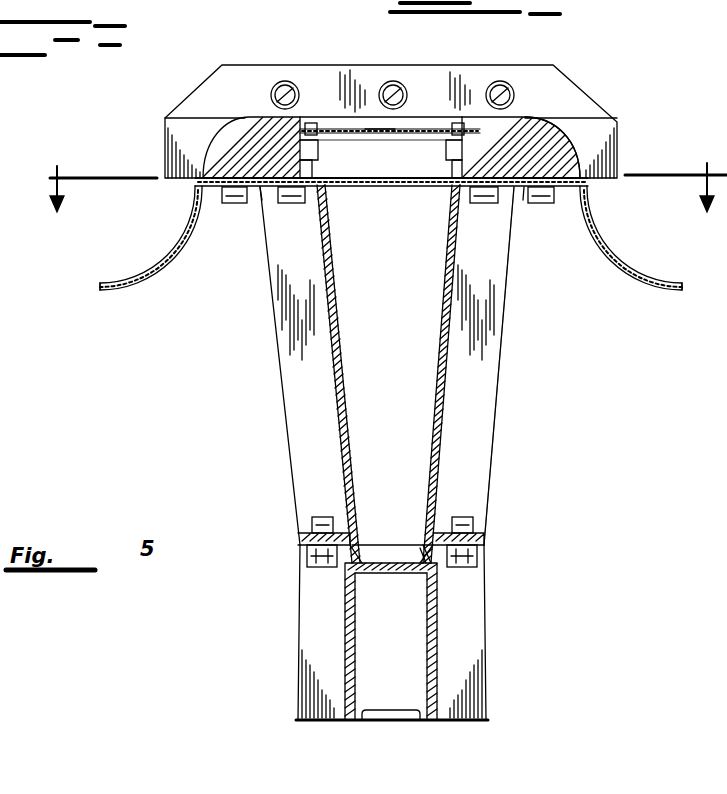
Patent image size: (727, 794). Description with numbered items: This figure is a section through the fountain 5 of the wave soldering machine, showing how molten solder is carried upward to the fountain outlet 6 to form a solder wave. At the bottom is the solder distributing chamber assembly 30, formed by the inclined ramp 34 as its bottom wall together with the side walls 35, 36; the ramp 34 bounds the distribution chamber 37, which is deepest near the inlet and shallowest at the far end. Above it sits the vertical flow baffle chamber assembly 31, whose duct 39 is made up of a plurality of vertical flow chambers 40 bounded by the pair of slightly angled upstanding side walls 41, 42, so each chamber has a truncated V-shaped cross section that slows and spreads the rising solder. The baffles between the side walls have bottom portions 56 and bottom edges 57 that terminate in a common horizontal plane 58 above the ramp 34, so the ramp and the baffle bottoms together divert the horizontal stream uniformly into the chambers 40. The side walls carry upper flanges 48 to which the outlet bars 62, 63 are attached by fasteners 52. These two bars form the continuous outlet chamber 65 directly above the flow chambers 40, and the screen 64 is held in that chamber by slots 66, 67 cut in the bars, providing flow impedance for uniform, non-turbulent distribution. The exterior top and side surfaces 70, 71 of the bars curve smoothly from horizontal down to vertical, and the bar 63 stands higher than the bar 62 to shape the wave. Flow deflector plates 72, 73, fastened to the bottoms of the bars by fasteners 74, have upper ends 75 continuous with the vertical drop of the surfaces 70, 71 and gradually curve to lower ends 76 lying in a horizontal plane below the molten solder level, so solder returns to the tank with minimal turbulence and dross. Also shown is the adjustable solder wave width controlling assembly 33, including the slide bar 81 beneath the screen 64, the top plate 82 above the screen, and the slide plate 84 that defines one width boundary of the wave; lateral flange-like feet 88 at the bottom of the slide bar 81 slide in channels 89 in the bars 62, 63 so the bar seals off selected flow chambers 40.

The fountain 5 is at (550, 365).
The fountain outlet 6 is at (355, 118).
The solder distributing chamber assembly 30 is at (293, 577).
The vertical flow baffle chamber assembly 31 is at (278, 326).
The adjustable solder wave width controlling assembly 33 is at (562, 70).
The inclined ramp 34 is at (408, 553).
The side wall 35 is at (350, 565).
The side wall 36 is at (434, 562).
The distribution chamber 37 is at (372, 550).
The duct 39 is at (378, 400).
The vertical flow chambers 40 is at (381, 357).
The upstanding side wall 41 is at (445, 279).
The upstanding side wall 42 is at (332, 286).
The upper flanges 48 is at (260, 190).
The fasteners 52 is at (295, 197).
The bottom portions 56 is at (420, 515).
The bottom edges 57 is at (405, 543).
The common plane 58 is at (388, 545).
The bar 62 is at (237, 142).
The bar 63 is at (548, 130).
The screen 64 is at (368, 128).
The outlet chamber 65 is at (411, 126).
The slot 66 is at (312, 124).
The slot 67 is at (460, 124).
The exterior top and side surface 70 is at (213, 137).
The exterior top and side surface 71 is at (565, 142).
The flow deflector plate 72 is at (173, 247).
The flow deflector plate 73 is at (612, 247).
The fasteners 74 is at (224, 198).
The upper ends 75 is at (193, 203).
The lower ends 76 is at (100, 286).
The slide bar 81 is at (386, 142).
The top plate 82 is at (381, 149).
The slide plate 84 is at (603, 133).
The lateral flange-like feet 88 is at (314, 166).
The channels 89 is at (318, 148).